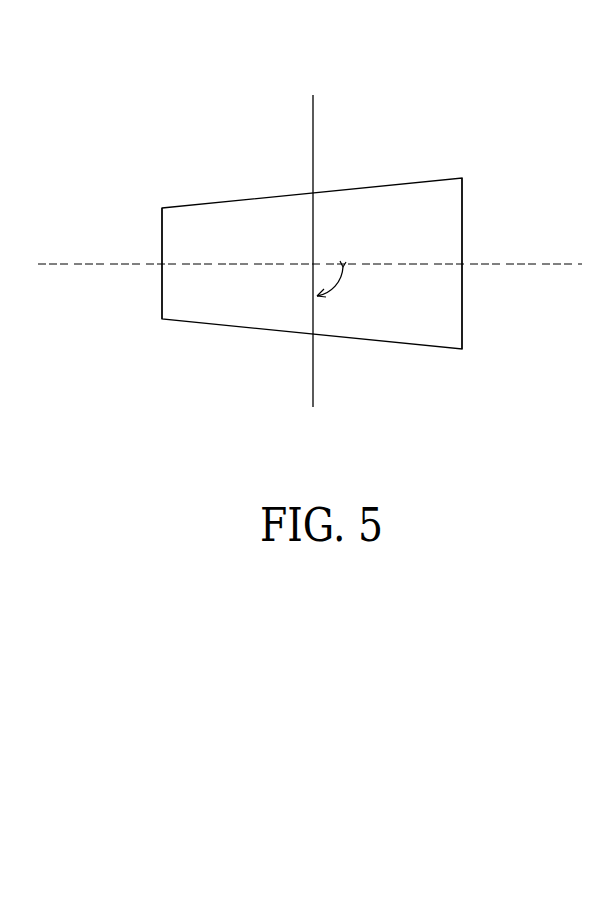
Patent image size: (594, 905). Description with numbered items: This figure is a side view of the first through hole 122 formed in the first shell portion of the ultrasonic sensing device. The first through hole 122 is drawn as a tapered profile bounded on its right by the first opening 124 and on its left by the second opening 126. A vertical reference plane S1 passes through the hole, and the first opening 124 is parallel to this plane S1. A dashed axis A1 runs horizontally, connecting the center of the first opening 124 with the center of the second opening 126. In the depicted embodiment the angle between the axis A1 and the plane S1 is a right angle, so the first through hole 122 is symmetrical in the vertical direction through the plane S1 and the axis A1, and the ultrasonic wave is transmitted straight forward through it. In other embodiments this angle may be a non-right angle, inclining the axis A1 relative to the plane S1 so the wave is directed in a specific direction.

The first through hole 122 is at (75, 41).
The first opening 124 is at (463, 220).
The second opening 126 is at (162, 232).
The axis A1 is at (538, 265).
The plane S1 is at (314, 378).